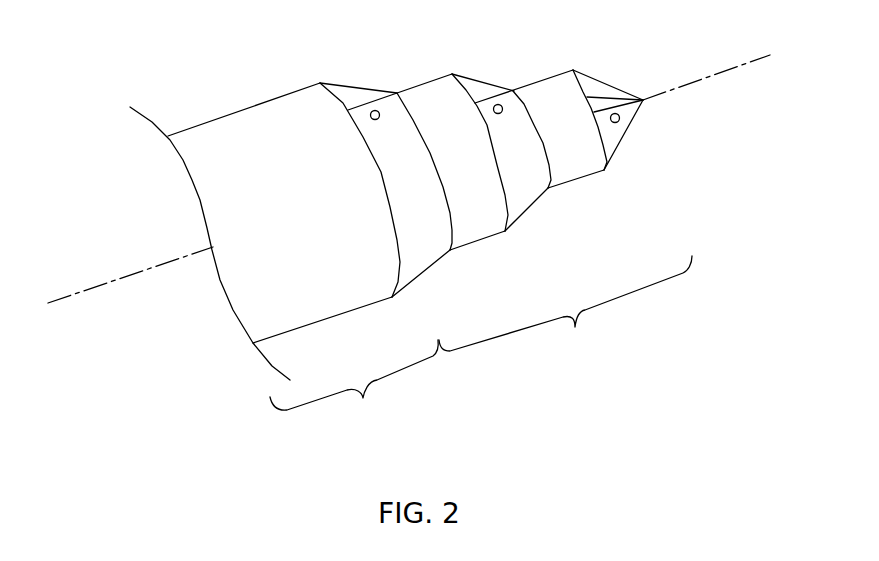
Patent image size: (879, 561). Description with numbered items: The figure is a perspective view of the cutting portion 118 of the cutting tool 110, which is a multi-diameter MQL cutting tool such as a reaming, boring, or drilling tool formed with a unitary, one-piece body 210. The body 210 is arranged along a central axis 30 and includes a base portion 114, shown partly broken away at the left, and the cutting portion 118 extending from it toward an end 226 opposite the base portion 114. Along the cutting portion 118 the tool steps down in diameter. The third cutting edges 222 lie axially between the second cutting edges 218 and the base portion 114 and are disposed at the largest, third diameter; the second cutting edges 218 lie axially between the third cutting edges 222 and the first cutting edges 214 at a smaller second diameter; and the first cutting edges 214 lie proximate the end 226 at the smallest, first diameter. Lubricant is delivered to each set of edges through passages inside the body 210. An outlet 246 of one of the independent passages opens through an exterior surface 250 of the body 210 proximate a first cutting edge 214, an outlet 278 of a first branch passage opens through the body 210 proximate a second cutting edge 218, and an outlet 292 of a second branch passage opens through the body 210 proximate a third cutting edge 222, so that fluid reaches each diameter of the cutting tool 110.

The cutting tool 110 is at (409, 215).
The central axis 30 is at (113, 281).
The base portion 114 is at (354, 383).
The cutting portion 118 is at (565, 307).
The unitary body 210 is at (242, 270).
The first cutting edges 214 is at (660, 109).
The second cutting edges 218 is at (490, 84).
The third cutting edges 222 is at (357, 88).
The end 226 is at (644, 101).
The outlet 246 is at (620, 121).
The exterior surface 250 is at (613, 143).
The outlet 278 is at (499, 113).
The outlet 292 is at (370, 116).